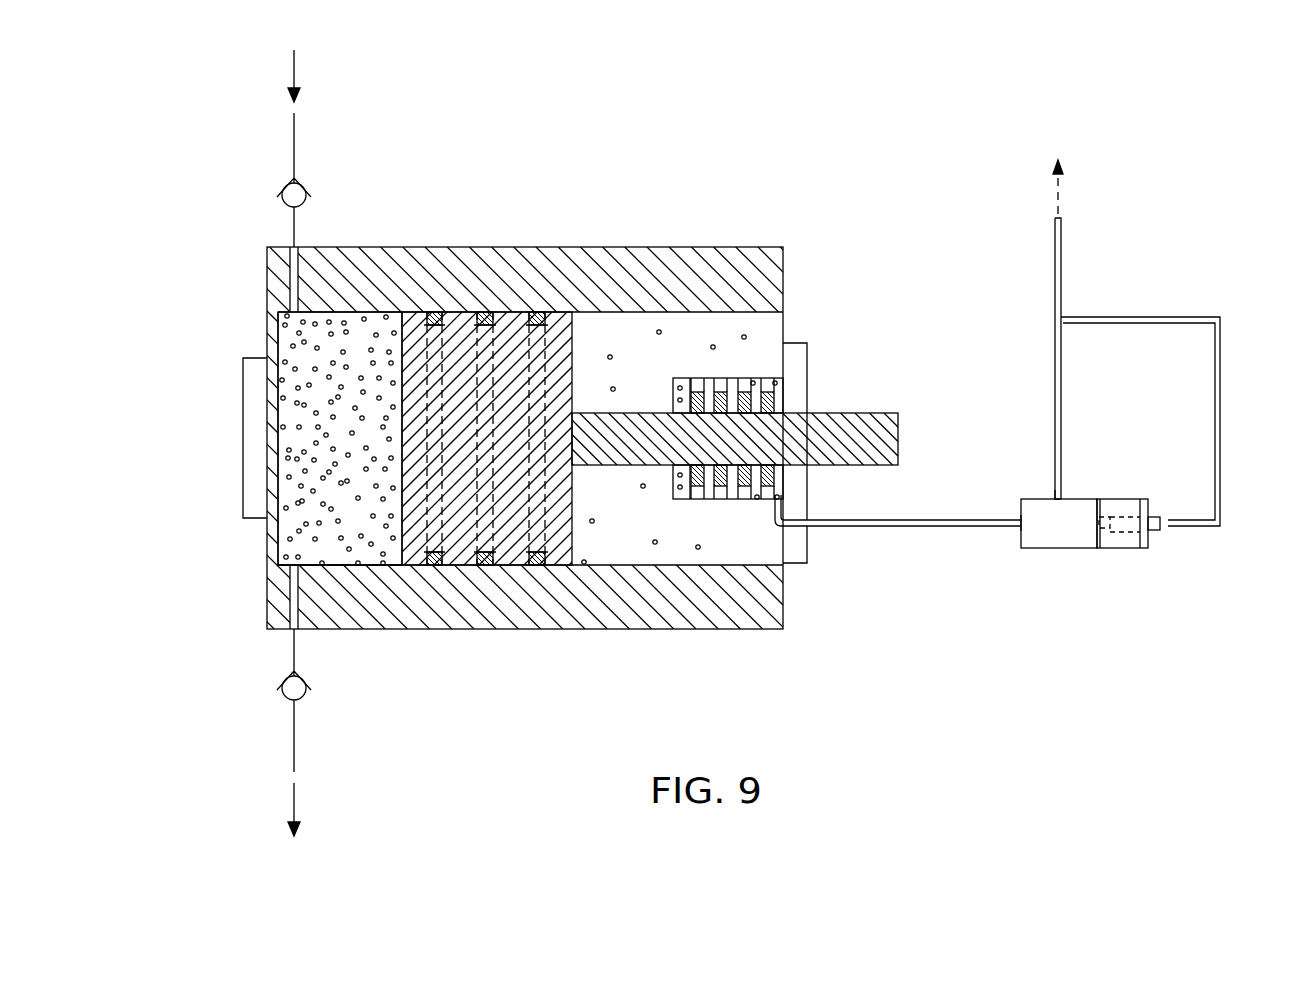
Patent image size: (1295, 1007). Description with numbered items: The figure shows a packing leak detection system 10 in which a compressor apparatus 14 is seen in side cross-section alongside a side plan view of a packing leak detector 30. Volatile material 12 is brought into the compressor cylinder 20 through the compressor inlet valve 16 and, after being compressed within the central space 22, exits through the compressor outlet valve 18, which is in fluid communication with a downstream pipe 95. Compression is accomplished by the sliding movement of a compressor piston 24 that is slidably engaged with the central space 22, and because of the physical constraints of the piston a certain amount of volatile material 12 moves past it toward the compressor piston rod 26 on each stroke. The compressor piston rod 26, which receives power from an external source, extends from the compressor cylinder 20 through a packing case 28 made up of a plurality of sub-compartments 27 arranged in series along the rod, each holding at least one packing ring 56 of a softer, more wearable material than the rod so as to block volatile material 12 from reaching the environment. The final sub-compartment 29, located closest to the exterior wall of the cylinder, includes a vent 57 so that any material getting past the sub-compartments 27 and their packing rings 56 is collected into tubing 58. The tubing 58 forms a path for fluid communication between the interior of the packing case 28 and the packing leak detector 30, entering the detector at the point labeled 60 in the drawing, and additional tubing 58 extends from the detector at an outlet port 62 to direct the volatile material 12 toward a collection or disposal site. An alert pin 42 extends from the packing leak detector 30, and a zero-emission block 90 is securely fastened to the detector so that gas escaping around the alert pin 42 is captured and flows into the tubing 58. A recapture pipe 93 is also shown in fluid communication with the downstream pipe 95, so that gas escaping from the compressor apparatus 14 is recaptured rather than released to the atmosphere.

The packing leak detection system 10 is at (720, 113).
The volatile material 12 is at (354, 326).
The compressor apparatus 14 is at (534, 236).
The compressor inlet valve 16 is at (277, 193).
The compressor outlet valve 18 is at (277, 688).
The compressor cylinder 20 is at (368, 312).
The central space 22 is at (372, 557).
The compressor piston 24 is at (520, 555).
The compressor piston rod 26 is at (643, 413).
The sub-compartments 27 is at (770, 378).
The packing case 28 is at (778, 306).
The final sub-compartment 29 is at (780, 397).
The packing leak detector 30 is at (1058, 565).
The alert pin 42 is at (1108, 515).
The packing ring 56 is at (750, 487).
The vent 57 is at (781, 510).
The tubing 58 is at (920, 527).
The pump inlet 60 is at (1021, 520).
The outlet port 62 is at (1063, 499).
The zero-emission block 90 is at (1118, 565).
The recapture pipe 93 is at (1220, 350).
The downstream pipe 95 is at (294, 752).